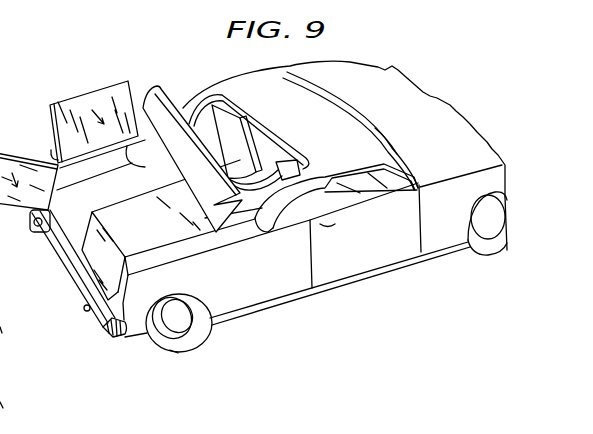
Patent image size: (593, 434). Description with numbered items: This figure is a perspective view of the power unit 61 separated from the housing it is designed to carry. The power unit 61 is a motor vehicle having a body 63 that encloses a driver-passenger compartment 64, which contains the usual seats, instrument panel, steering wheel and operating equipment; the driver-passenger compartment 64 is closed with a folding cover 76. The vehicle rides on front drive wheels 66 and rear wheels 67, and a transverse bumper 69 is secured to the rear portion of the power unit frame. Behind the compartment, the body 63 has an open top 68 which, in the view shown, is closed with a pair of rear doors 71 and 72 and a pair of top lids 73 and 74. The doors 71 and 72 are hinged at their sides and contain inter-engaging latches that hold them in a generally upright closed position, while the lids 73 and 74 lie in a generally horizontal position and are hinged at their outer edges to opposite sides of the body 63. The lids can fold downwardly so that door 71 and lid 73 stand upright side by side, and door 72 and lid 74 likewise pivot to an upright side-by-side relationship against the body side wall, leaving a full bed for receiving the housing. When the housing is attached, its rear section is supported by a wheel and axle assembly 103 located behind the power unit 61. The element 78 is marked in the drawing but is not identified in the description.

The power unit 61 is at (401, 86).
The body 63 is at (383, 245).
The driver-passenger compartment 64 is at (273, 145).
The front drive wheels 66 is at (487, 250).
The rear wheels 67 is at (190, 332).
The open top 68 is at (240, 109).
The transverse bumper 69 is at (100, 328).
The rear door 71 is at (34, 151).
The rear door 72 is at (110, 270).
The top lid 73 is at (77, 112).
The top lid 74 is at (160, 231).
The folding cover 76 is at (161, 107).
The panel 78 is at (0, 53).
The wheel and axle assembly 103 is at (179, 357).